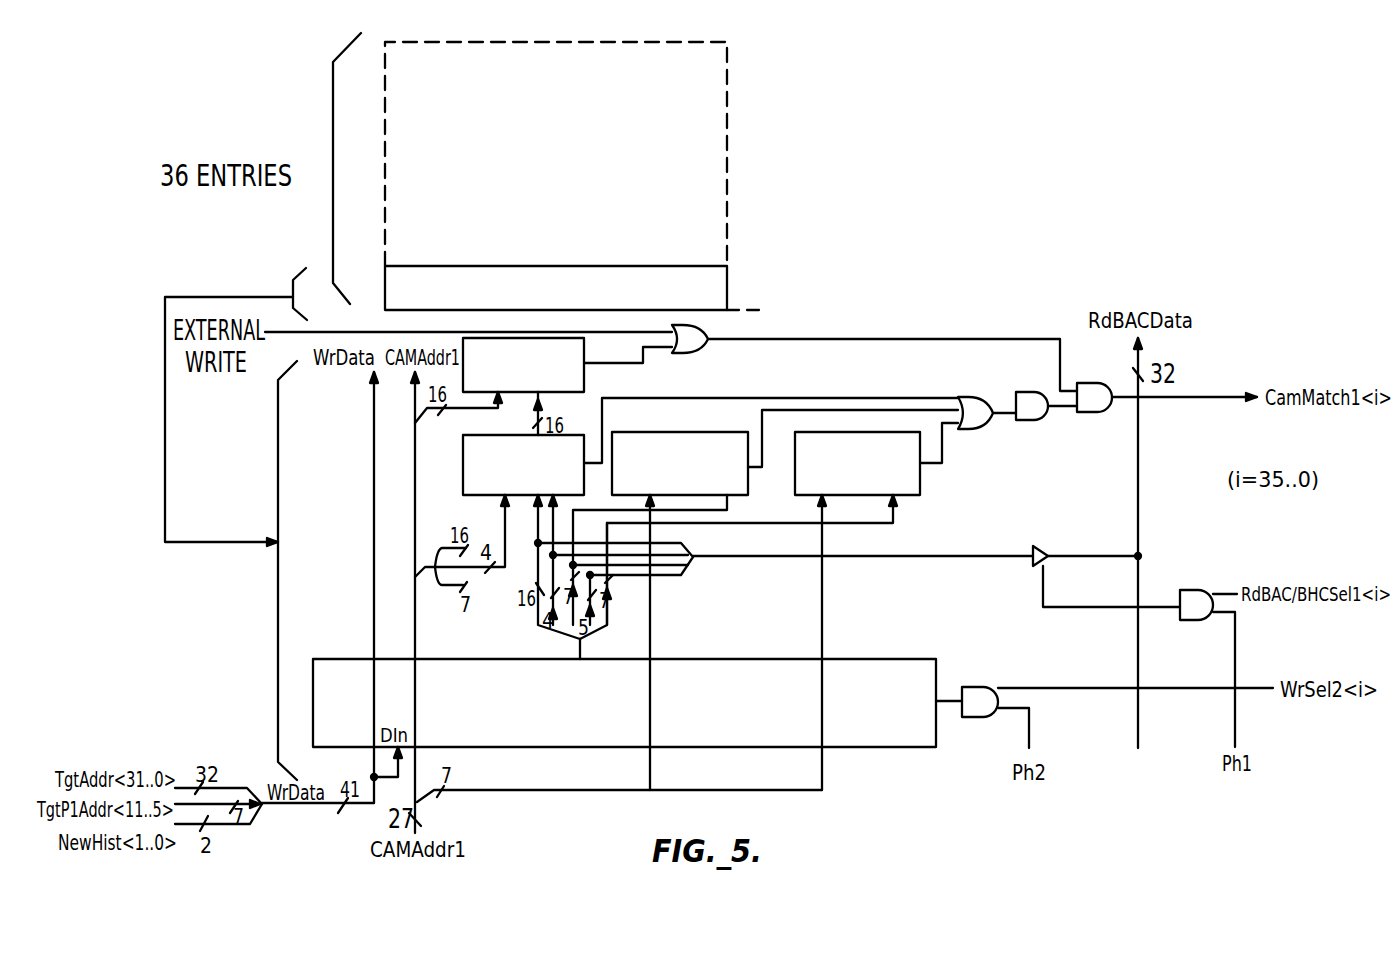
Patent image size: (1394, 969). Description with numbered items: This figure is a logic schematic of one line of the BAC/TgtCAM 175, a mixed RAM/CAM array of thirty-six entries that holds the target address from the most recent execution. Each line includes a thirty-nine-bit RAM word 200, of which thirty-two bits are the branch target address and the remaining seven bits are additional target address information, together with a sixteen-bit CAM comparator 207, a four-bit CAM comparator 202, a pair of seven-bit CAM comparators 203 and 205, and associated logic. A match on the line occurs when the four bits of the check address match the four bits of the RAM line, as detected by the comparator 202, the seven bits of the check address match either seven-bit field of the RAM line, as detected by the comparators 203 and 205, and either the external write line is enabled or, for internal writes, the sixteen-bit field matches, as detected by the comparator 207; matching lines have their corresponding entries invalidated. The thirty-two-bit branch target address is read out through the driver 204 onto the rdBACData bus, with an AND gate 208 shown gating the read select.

The BAC/TgtCAM 175 is at (730, 60).
The 39-bit RAM word 200 is at (902, 659).
The 4-bit CAM comparator 202 is at (463, 470).
The 7-bit CAM comparator 203 is at (648, 430).
The driver 204 is at (1040, 546).
The 7-bit CAM comparator 205 is at (920, 481).
The 16-bit CAM comparator 207 is at (584, 378).
The AND gate 208 is at (1186, 590).